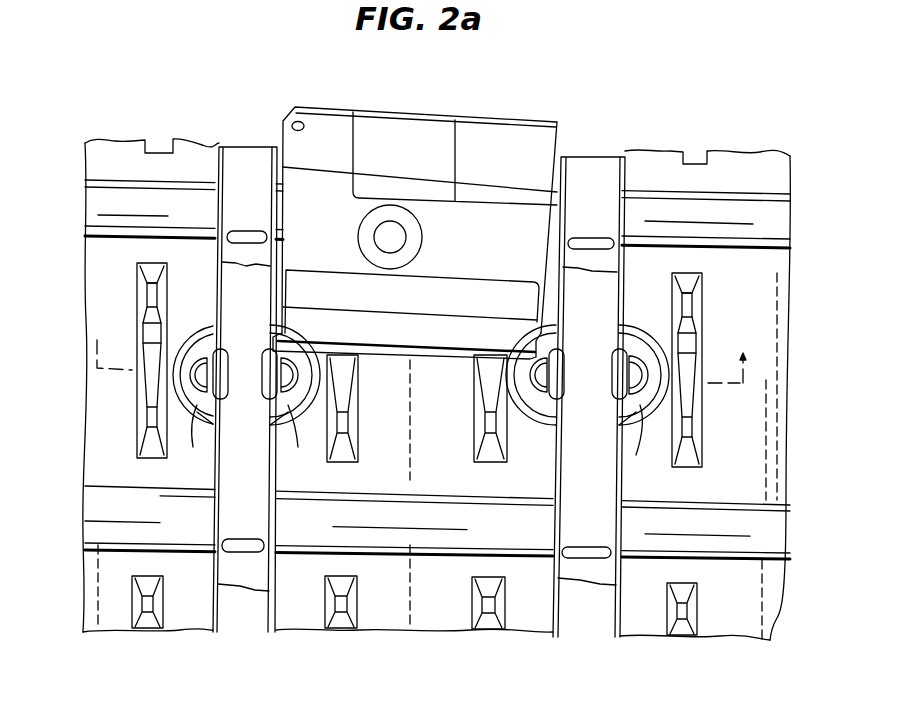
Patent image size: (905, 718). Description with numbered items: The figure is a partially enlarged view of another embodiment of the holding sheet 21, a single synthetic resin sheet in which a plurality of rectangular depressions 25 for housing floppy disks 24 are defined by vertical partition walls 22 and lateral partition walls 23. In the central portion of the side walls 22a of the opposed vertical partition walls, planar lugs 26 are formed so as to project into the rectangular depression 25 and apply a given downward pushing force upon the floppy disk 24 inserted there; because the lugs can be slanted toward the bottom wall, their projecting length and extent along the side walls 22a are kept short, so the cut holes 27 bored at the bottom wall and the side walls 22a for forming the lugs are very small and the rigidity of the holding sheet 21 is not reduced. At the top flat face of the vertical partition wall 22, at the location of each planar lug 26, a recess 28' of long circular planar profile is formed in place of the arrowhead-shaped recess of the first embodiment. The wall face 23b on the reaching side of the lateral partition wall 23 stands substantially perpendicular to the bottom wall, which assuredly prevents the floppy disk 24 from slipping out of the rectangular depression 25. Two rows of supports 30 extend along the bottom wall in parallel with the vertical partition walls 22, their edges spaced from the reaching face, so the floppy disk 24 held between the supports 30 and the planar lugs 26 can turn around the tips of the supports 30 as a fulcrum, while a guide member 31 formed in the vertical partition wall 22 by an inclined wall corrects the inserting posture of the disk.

The holding sheet 21 is at (632, 123).
The vertical partition wall 22 is at (583, 598).
The side wall of vertical partition wall 22a is at (208, 598).
The lateral partition wall 23 is at (728, 218).
The wall face on the reaching side 23b is at (151, 488).
The floppy disk 24 is at (395, 160).
The rectangular depression 25 is at (748, 278).
The planar lug 26 is at (272, 403).
The cut hole 27 is at (296, 448).
The long circular shape recess 28' is at (587, 405).
The support 30 is at (134, 285).
The guide member 31 is at (147, 385).